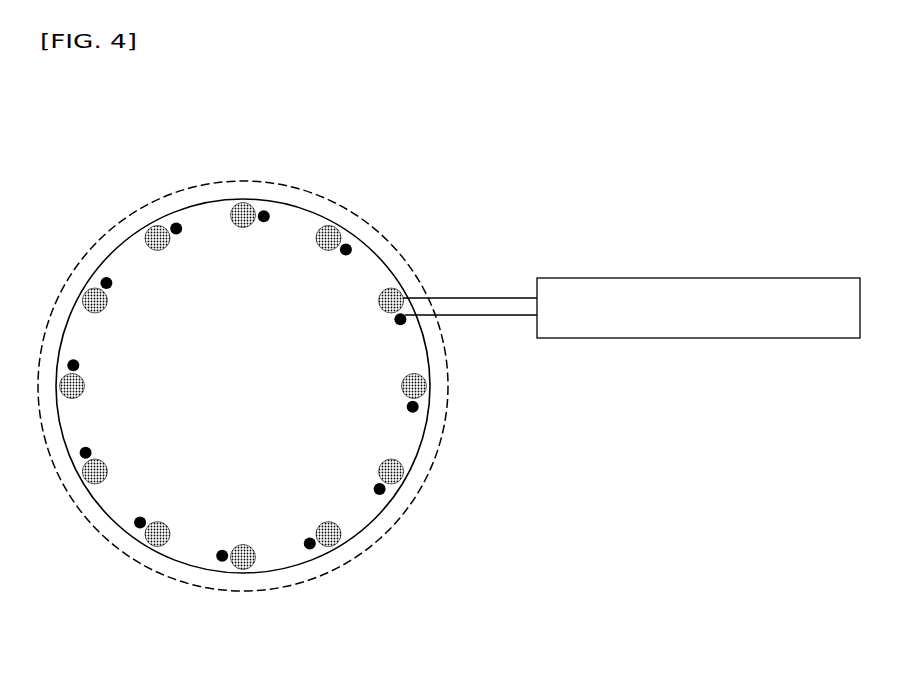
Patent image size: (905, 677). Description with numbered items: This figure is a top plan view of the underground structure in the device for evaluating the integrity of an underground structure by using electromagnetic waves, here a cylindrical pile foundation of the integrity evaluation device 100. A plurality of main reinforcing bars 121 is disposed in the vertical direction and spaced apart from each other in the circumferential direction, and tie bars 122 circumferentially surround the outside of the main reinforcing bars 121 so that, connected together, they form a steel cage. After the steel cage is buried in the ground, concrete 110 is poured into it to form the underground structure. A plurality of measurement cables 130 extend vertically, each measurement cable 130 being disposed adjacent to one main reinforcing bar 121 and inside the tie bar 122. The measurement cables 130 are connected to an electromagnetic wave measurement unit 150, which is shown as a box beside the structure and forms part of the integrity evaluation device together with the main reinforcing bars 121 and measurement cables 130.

The electromagnetic wave measurement system 100 is at (172, 142).
The concrete 110 is at (239, 186).
The tie bar 122 is at (289, 201).
The main reinforcing bar 121 is at (337, 226).
The measurement cable 130 is at (349, 240).
The electromagnetic wave measurement unit 150 is at (600, 278).